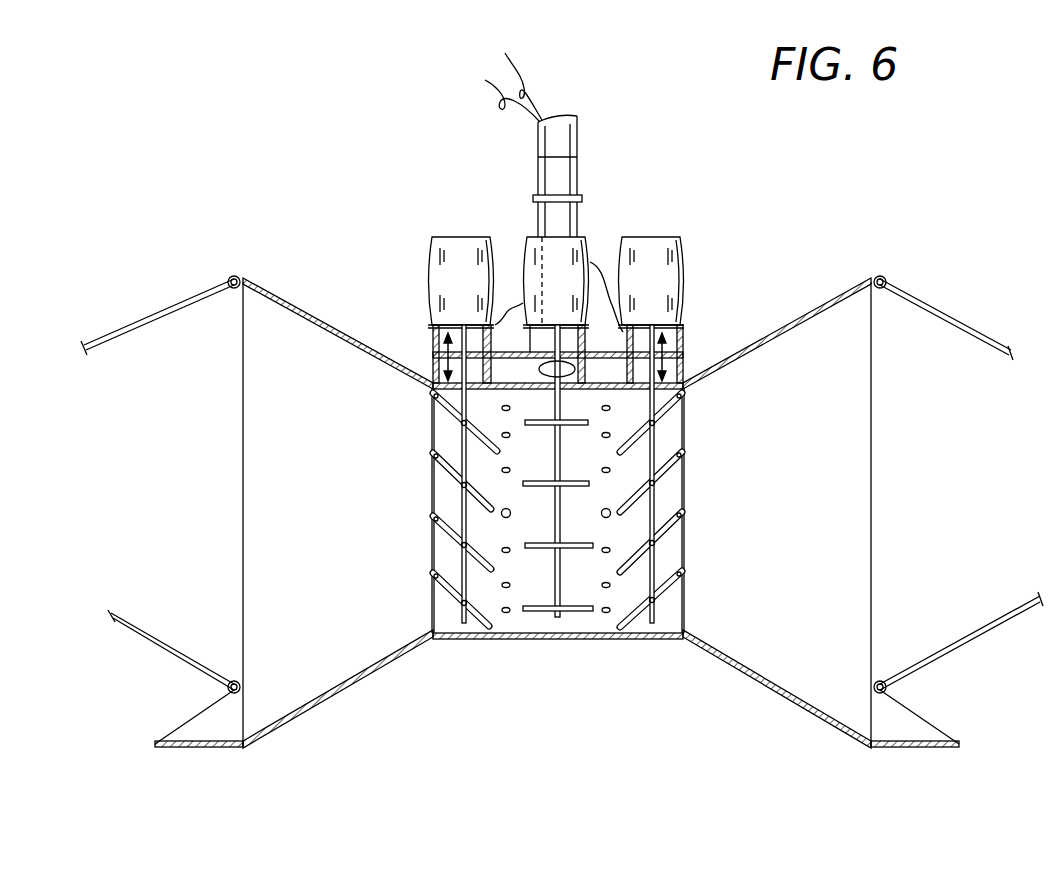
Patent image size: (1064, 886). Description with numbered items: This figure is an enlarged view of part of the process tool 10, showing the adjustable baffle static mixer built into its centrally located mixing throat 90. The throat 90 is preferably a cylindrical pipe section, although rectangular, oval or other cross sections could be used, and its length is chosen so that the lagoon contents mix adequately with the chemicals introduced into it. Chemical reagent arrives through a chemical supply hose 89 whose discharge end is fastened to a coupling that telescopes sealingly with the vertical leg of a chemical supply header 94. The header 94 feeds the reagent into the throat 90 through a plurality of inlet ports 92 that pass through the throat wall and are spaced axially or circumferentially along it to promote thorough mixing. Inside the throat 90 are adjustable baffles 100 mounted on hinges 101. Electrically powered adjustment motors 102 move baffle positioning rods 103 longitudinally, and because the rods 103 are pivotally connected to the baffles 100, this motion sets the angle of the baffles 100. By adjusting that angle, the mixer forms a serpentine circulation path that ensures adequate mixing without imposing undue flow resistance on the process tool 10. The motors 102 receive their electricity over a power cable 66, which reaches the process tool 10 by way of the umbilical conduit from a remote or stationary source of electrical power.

The process tool 10 is at (328, 172).
The power cable 66 is at (498, 90).
The chemical supply hose 89 is at (577, 143).
The mixing throat 90 is at (598, 642).
The inlet ports 92 is at (527, 392).
The chemical supply header 94 is at (603, 350).
The adjustable baffles 100 is at (448, 412).
The hinges 101 is at (432, 573).
The adjustment motors 102 is at (433, 277).
The baffle positioning rods 103 is at (585, 481).